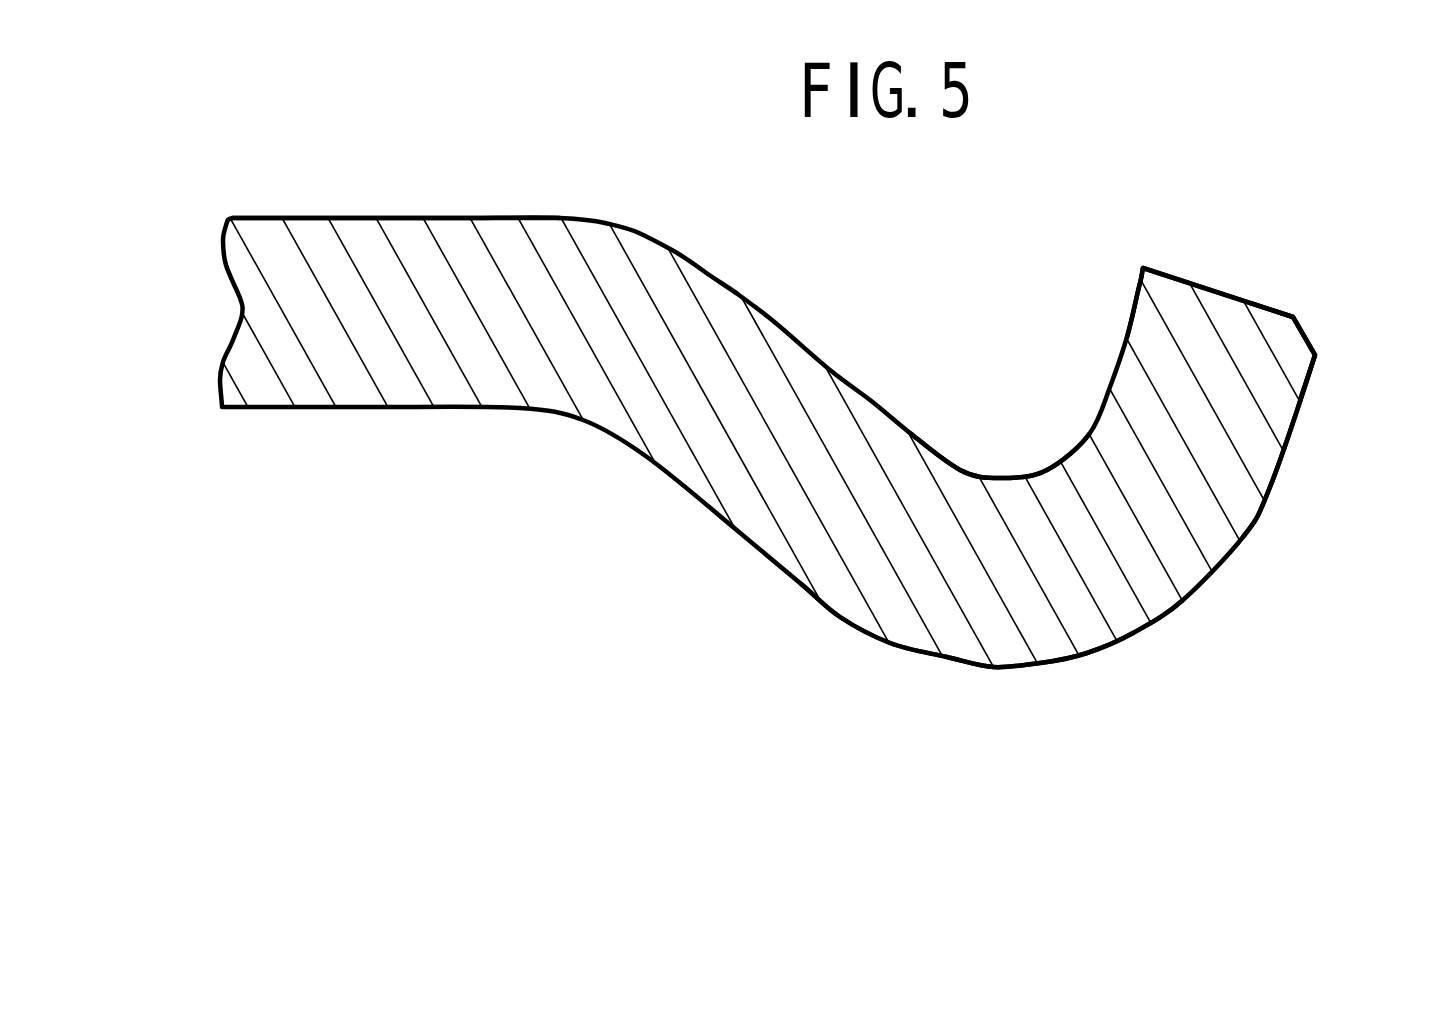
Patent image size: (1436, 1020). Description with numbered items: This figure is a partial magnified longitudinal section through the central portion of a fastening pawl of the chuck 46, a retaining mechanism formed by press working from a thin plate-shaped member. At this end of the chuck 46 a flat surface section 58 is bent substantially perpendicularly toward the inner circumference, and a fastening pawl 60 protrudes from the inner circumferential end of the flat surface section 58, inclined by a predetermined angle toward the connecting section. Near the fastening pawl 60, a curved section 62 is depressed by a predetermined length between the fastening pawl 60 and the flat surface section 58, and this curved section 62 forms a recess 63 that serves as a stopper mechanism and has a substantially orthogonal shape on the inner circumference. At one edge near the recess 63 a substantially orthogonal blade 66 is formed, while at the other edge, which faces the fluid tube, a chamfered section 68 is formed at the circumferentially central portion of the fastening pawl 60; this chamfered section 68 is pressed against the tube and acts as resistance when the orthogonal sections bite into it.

The chuck 46 is at (398, 406).
The flat surface section 58 is at (410, 217).
The fastening pawl 60 is at (1255, 427).
The curved section 62 is at (1048, 643).
The recess 63 is at (1017, 470).
The substantially orthogonal blade 66 is at (1143, 268).
The chamfered section 68 is at (1307, 333).